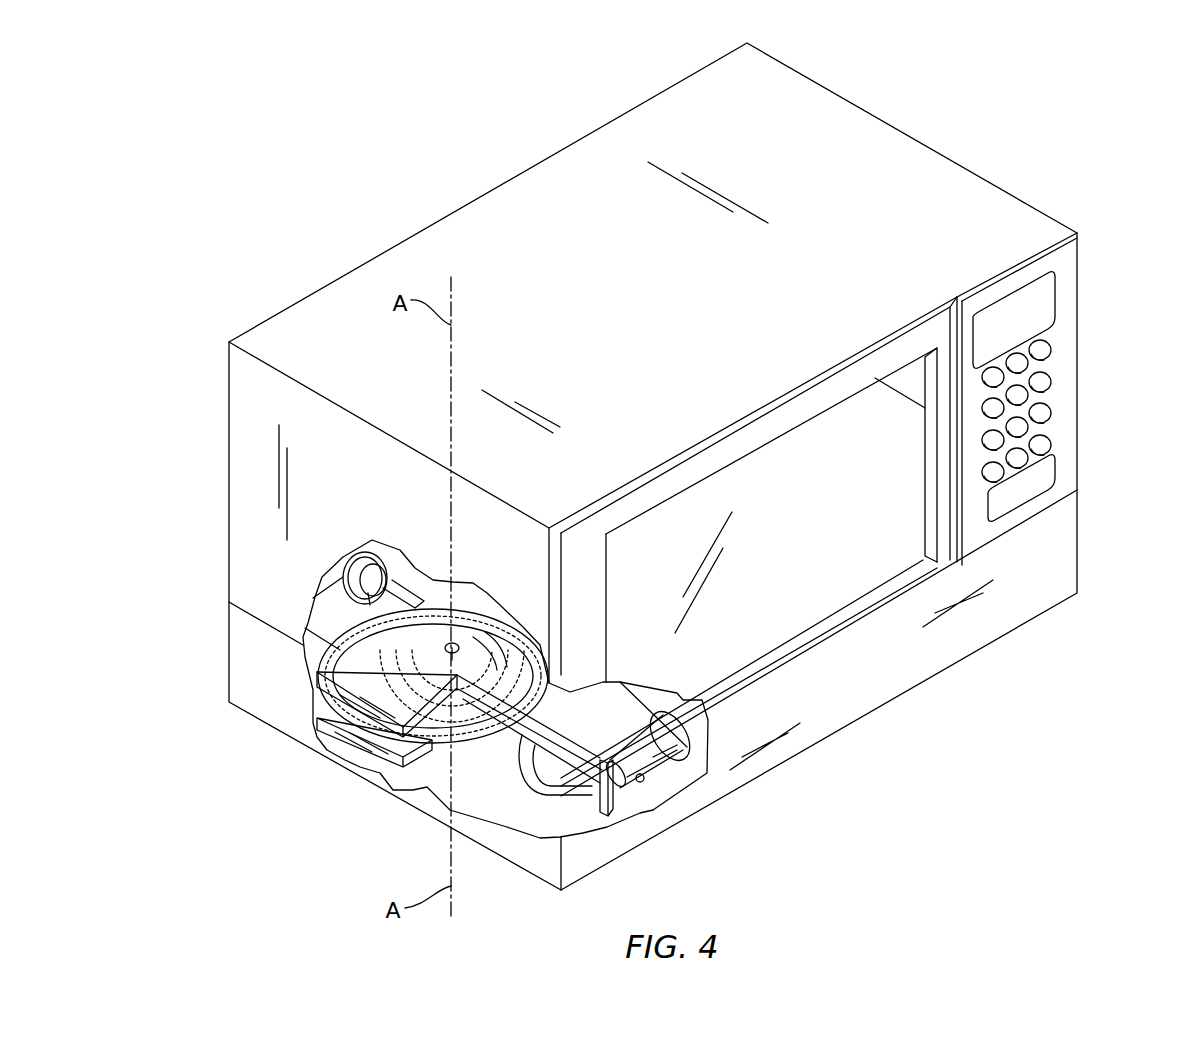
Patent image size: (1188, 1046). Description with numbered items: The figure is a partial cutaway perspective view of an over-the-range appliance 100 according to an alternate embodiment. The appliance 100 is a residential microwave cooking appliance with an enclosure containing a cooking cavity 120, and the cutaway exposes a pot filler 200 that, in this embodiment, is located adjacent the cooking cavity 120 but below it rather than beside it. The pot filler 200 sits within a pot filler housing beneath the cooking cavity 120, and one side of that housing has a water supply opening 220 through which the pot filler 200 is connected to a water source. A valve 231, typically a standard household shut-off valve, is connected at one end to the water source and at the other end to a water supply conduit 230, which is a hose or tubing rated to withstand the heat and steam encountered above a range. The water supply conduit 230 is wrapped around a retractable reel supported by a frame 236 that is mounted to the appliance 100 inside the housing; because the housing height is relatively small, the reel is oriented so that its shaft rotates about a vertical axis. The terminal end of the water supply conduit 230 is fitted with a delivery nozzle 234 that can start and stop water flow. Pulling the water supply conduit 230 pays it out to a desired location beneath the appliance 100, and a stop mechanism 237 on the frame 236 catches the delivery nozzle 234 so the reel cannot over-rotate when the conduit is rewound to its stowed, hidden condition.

The appliance 100 is at (1100, 162).
The cooking cavity 120 is at (871, 508).
The pot filler 200 is at (440, 766).
The water supply opening 220 is at (357, 557).
The water supply conduit 230 is at (538, 790).
The valve 231 is at (383, 567).
The delivery nozzle 234 is at (655, 748).
The frame 236 is at (352, 671).
The stop mechanism 237 is at (598, 818).